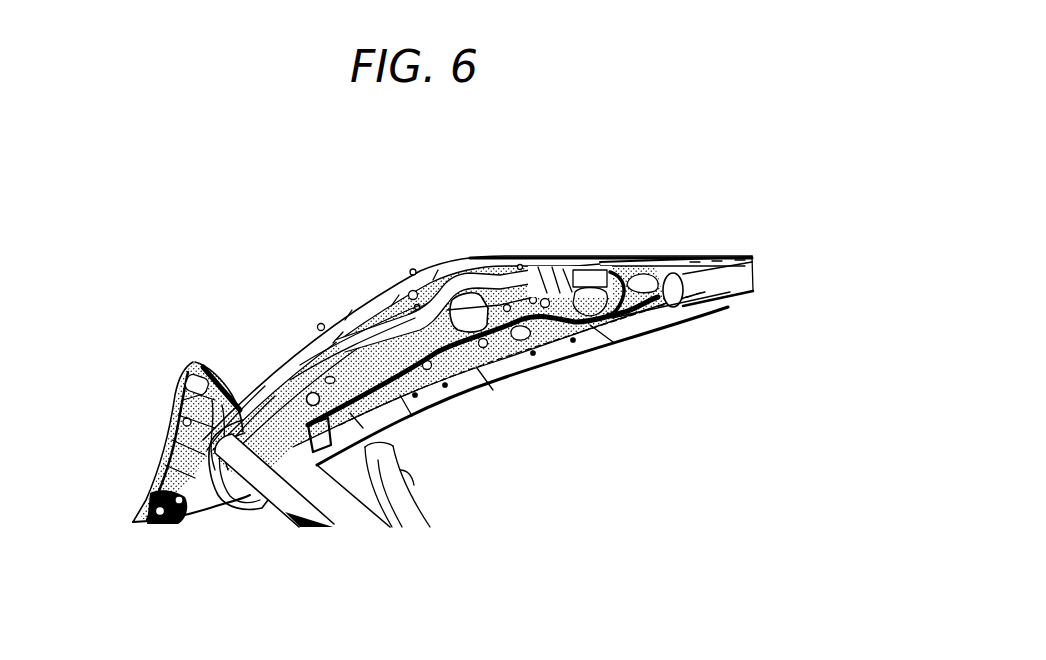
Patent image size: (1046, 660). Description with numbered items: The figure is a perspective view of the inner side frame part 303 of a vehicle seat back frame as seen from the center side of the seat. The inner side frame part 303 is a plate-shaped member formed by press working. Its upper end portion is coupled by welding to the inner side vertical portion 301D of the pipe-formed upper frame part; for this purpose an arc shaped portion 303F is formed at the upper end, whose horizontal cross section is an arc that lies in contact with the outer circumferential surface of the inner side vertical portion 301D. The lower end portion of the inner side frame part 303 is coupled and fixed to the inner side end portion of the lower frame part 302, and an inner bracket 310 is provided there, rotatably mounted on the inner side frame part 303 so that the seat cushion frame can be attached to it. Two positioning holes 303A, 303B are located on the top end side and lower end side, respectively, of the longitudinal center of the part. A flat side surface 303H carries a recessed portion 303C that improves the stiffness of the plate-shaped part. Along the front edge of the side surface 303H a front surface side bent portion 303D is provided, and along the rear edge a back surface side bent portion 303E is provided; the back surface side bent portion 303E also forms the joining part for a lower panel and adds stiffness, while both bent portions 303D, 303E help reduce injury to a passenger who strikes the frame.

The inner side vertical portion 301D is at (737, 297).
The lower frame part 302 is at (280, 500).
The inner side frame part 303 is at (501, 244).
The positioning hole 303A is at (543, 300).
The positioning hole 303B is at (310, 393).
The recessed portion 303C is at (397, 357).
The front surface side bent portion 303D is at (433, 270).
The back surface side bent portion 303E is at (510, 363).
The arc shaped portion 303F is at (730, 256).
The side surface 303H is at (381, 307).
The inner bracket 310 is at (190, 363).